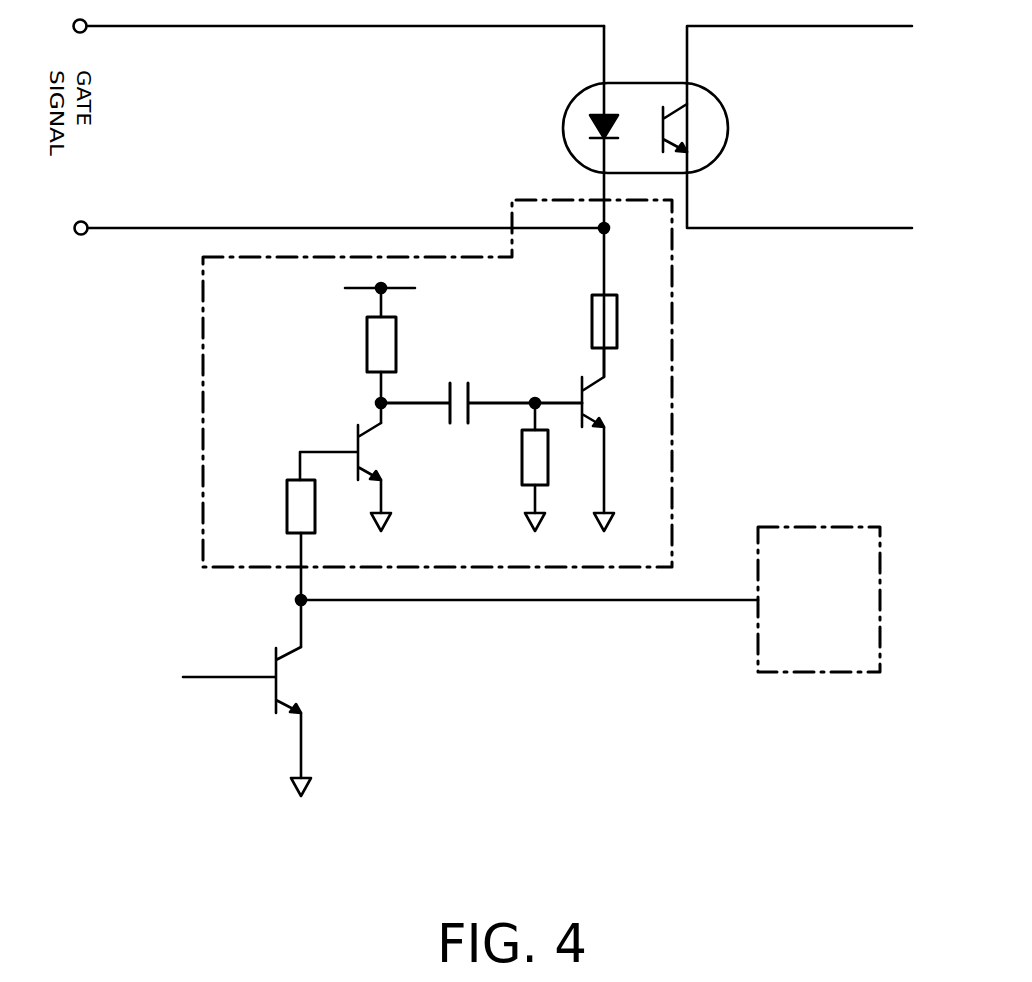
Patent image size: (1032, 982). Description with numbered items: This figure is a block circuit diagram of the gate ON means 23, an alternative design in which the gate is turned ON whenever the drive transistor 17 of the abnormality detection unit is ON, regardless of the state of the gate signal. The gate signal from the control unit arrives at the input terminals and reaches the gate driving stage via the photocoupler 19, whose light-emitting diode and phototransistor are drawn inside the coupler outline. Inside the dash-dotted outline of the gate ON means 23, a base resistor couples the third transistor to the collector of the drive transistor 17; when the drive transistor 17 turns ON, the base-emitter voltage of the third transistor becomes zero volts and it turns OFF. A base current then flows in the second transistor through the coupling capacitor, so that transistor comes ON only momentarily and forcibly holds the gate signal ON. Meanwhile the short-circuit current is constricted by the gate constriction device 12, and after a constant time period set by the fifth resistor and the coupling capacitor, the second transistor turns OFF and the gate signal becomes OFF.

The photocoupler 19 is at (728, 104).
The gate ON means 23 is at (672, 313).
The drive transistor 17 is at (293, 688).
The gate constriction device 12 is at (785, 672).